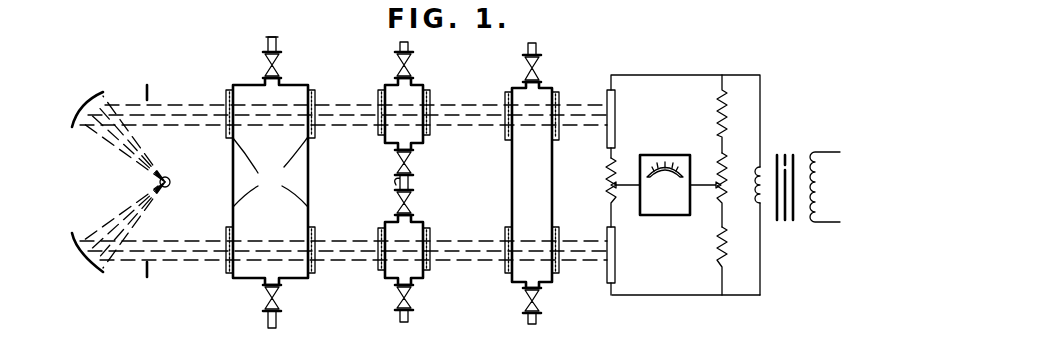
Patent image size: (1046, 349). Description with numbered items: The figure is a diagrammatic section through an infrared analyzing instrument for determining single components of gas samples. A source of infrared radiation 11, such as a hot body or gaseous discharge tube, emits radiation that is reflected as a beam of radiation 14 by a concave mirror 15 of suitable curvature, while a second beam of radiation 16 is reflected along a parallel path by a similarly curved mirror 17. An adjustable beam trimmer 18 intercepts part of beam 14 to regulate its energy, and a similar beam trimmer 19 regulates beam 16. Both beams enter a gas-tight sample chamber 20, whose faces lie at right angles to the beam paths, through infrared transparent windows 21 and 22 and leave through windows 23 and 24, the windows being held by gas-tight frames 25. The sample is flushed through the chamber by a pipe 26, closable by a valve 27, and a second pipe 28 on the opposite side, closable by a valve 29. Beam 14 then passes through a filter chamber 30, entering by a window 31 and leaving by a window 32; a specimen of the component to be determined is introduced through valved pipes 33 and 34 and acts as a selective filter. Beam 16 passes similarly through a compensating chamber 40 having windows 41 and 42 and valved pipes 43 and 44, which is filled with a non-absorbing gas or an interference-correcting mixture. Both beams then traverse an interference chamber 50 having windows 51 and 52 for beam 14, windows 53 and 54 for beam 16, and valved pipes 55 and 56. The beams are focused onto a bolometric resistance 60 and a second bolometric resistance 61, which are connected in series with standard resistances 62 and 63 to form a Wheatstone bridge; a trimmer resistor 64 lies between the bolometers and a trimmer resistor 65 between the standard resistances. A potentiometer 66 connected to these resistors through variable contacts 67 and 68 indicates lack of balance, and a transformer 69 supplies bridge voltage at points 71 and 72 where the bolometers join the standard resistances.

The source of infrared radiation 11 is at (159, 183).
The beam of radiation 14 is at (143, 148).
The concave mirror 15 is at (95, 100).
The second beam of radiation 16 is at (143, 215).
The mirror 17 is at (95, 262).
The adjustable beam trimmer 18 is at (147, 85).
The beam trimmer 19 is at (148, 275).
The gas-tight sample chamber 20 is at (310, 169).
The window 21 is at (227, 98).
The window 22 is at (227, 258).
The window 23 is at (314, 98).
The window 24 is at (314, 238).
The gas-tight frames 25 is at (270, 172).
The pipe 26 is at (268, 40).
The valve 27 is at (264, 65).
The second pipe 28 is at (268, 322).
The valve 29 is at (278, 299).
The filter chamber 30 is at (420, 85).
The infrared transparent window 31 is at (379, 100).
The window 32 is at (432, 130).
The valved pipe 33 is at (400, 45).
The valved pipe 34 is at (411, 170).
The compensating chamber 40 is at (422, 280).
The infrared transparent window 41 is at (380, 262).
The infrared transparent window 42 is at (430, 232).
The valved pipe 43 is at (396, 185).
The valved pipe 44 is at (408, 318).
The interference chamber 50 is at (548, 88).
The window 51 is at (506, 98).
The window 52 is at (557, 100).
The window 53 is at (507, 262).
The window 54 is at (557, 265).
The valved pipe 55 is at (536, 46).
The valved pipe 56 is at (536, 318).
The bolometric resistance 60 is at (616, 100).
The second bolometric resistance 61 is at (616, 271).
The standard resistance 62 is at (719, 118).
The standard resistance 63 is at (718, 258).
The trimmer resistor 64 is at (611, 178).
The trimmer resistor 65 is at (722, 178).
The potentiometer 66 is at (661, 208).
The variable contact 67 is at (633, 185).
The variable contact 68 is at (700, 185).
The transformer 69 is at (785, 222).
The point 71 is at (722, 75).
The point 72 is at (722, 295).